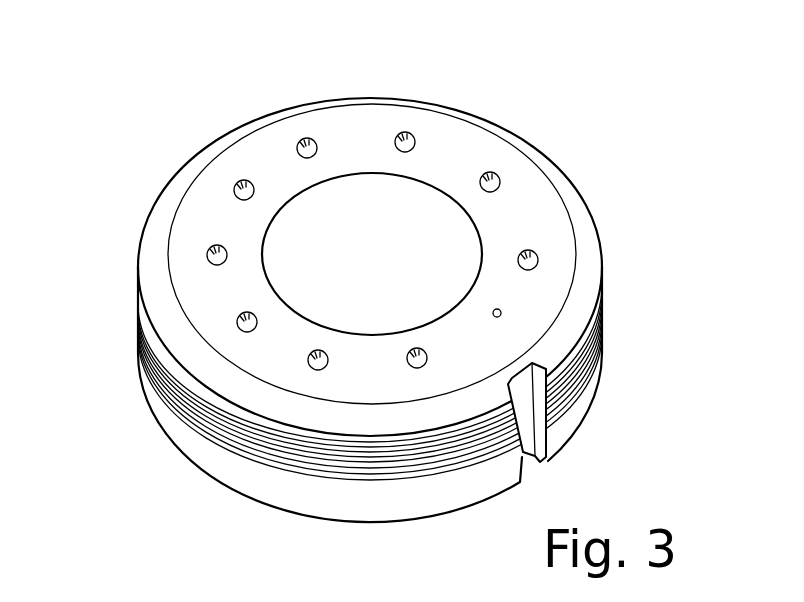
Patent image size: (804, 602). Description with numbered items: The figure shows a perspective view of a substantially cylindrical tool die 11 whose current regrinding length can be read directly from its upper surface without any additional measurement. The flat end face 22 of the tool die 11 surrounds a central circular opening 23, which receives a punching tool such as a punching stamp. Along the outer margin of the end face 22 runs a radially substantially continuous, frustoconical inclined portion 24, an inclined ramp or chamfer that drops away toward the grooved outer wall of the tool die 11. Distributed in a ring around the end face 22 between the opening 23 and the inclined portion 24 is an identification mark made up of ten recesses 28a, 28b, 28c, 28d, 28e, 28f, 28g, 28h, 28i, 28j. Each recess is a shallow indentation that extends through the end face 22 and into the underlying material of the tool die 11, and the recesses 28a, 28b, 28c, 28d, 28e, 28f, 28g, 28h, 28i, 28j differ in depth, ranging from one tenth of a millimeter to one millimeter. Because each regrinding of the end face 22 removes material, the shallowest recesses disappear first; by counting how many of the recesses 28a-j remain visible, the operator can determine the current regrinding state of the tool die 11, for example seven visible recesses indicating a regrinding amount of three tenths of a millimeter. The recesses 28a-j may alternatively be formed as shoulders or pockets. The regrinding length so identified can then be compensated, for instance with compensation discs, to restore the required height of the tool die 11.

The tool die 11 is at (578, 137).
The end face 22 is at (344, 122).
The circular opening 23 is at (316, 218).
The inclined portion 24 is at (148, 256).
The recess 28a is at (501, 314).
The recess 28b is at (538, 258).
The recess 28c is at (500, 181).
The recess 28d is at (410, 137).
The recess 28e is at (307, 138).
The recess 28f is at (237, 183).
The recess 28g is at (209, 250).
The recess 28h is at (239, 319).
The recess 28i is at (311, 365).
The recess 28j is at (408, 364).